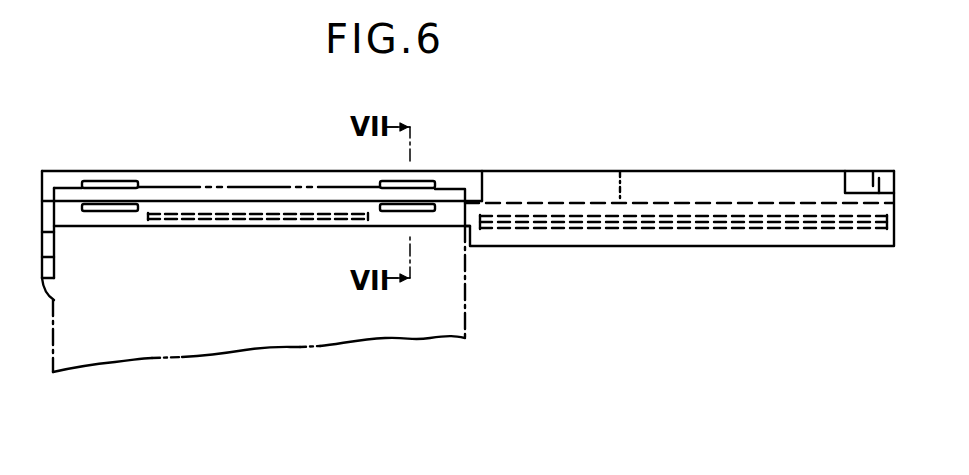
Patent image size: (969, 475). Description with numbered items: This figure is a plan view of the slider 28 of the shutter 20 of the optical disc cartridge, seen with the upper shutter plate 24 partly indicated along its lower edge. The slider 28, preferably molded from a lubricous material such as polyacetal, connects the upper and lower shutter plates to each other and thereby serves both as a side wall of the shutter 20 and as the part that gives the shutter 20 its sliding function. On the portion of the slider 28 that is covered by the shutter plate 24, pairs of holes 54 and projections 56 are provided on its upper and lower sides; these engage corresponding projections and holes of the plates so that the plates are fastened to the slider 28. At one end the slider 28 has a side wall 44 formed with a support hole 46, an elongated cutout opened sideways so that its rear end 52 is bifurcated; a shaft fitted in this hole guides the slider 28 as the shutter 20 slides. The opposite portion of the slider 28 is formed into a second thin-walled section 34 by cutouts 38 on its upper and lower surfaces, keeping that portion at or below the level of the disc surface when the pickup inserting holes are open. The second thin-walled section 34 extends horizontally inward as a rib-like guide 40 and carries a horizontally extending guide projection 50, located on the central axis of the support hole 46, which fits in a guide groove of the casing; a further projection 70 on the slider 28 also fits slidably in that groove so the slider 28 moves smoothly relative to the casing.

The shutter 20 is at (84, 387).
The upper shutter plate 24 is at (455, 318).
The slider 28 is at (283, 175).
The second thin-walled section 34 is at (584, 182).
The cutouts 38 is at (718, 178).
The rib-like guide 40 is at (804, 247).
The side wall 44 is at (43, 208).
The support hole 46 is at (55, 238).
The guide projection 50 is at (720, 228).
The rear end 52 is at (54, 282).
The holes 54 is at (113, 180).
The projections 56 is at (119, 212).
The projection 70 is at (313, 226).